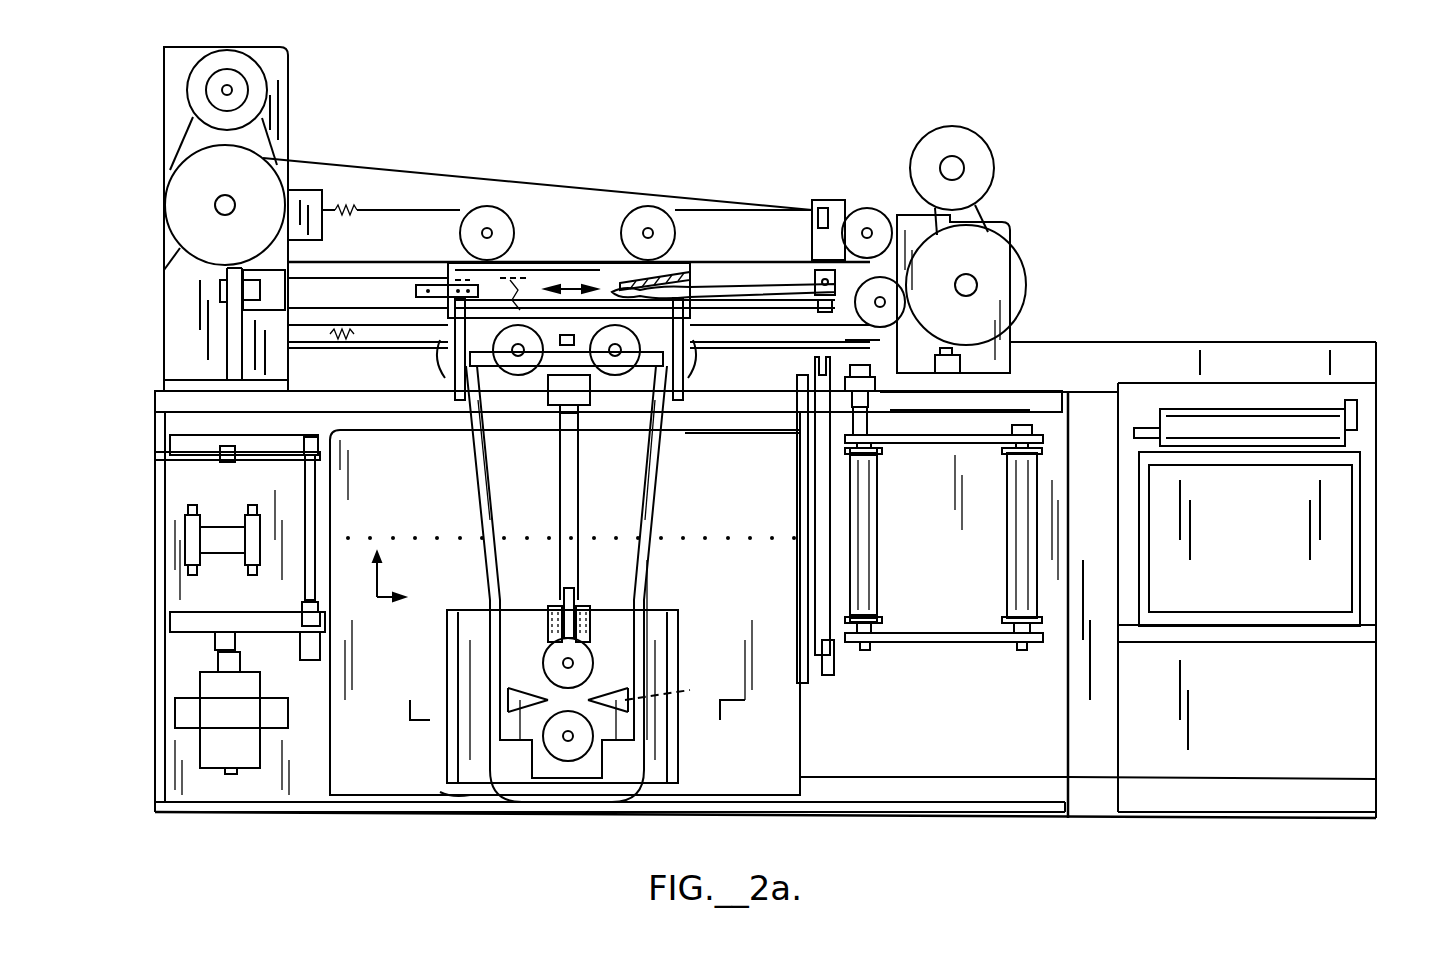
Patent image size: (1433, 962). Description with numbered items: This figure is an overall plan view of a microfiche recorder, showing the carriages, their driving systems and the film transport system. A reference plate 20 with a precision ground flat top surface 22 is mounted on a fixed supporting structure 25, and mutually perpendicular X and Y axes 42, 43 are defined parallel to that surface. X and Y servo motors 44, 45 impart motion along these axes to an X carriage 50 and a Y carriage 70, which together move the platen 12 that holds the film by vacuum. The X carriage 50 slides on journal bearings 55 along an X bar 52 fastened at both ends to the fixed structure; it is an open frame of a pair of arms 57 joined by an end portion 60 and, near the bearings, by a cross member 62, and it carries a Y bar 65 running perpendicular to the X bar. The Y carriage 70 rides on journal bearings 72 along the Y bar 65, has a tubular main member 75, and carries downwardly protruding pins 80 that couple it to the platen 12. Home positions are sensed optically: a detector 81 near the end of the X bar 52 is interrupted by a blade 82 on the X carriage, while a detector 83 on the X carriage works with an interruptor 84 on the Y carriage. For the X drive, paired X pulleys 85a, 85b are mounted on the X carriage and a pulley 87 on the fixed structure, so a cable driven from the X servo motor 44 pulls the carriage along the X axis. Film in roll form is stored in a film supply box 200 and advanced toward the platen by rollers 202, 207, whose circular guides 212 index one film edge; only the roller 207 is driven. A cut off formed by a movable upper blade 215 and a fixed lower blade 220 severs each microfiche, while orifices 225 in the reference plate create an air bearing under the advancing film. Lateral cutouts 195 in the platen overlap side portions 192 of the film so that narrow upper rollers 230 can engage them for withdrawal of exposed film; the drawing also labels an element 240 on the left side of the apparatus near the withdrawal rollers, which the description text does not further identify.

The platen 12 is at (670, 780).
The reference plate 20 is at (737, 785).
The top surface 22 is at (383, 769).
The fixed supporting structure 25 is at (312, 790).
The X axis 42 is at (385, 600).
The Y axis 43 is at (370, 580).
The X servo motor 44 is at (262, 75).
The Y servo motor 45 is at (980, 158).
The X carriage 50 is at (668, 515).
The X bar 52 is at (730, 286).
The journal bearings 55 is at (672, 270).
The arms 57 is at (666, 558).
The end portion 60 is at (580, 802).
The cross member 62 is at (655, 358).
The Y bar 65 is at (578, 470).
The Y carriage 70 is at (580, 698).
The journal bearings 72 is at (592, 632).
The main member 75 is at (552, 700).
The pin 80 is at (673, 687).
The detector 81 is at (290, 318).
The blade 82 is at (455, 290).
The detector 83 is at (582, 398).
The interruptor 84 is at (578, 600).
The X pulley 85a is at (497, 225).
The X pulley 85b is at (632, 228).
The pulley 87 is at (248, 185).
The side portions of film 192 is at (455, 792).
The lateral cutouts 195 is at (460, 600).
The film supply box 200 is at (1340, 568).
The roller 202 is at (1008, 546).
The roller 207 is at (862, 530).
The circular guides 212 is at (877, 455).
The upper blade 215 is at (806, 552).
The lower blade 220 is at (802, 588).
The orifices 225 is at (732, 532).
The upper rollers 230 is at (318, 455).
The rail 240 is at (248, 443).